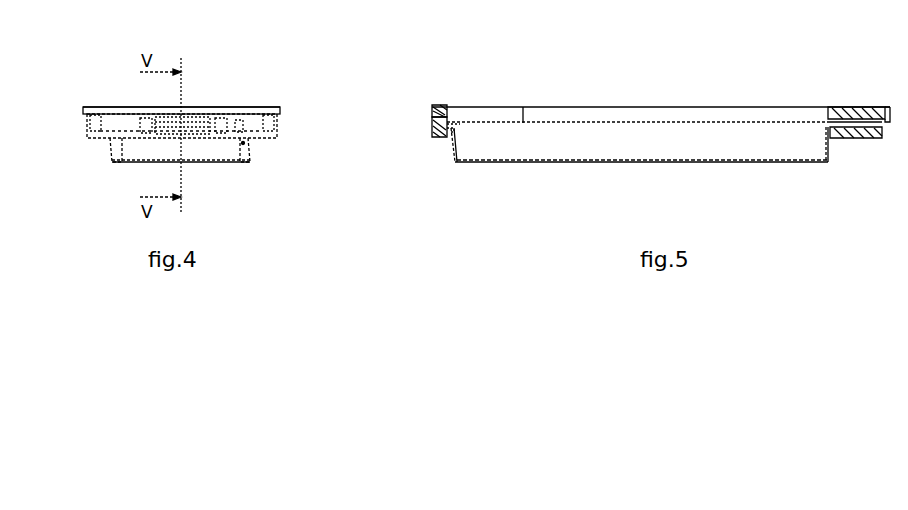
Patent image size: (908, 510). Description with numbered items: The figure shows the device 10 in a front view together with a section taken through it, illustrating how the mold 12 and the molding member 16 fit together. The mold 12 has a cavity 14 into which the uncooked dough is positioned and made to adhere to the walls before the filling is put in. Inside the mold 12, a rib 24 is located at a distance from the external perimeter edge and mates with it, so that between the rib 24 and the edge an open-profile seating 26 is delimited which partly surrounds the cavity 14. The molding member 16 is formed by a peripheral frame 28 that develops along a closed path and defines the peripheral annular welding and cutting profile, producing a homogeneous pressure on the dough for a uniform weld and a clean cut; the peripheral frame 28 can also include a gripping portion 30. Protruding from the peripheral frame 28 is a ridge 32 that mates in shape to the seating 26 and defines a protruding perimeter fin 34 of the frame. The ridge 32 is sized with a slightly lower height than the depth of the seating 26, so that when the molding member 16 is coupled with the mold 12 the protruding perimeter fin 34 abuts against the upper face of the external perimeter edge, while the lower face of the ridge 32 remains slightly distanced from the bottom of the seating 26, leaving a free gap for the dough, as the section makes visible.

In FIG. 4, the device 10 is at (205, 75).
In FIG. 5, the device 10 is at (688, 98).
In FIG. 4, the mold 12 is at (237, 162).
In FIG. 5, the mold 12 is at (598, 163).
In FIG. 4, the cavity 14 is at (243, 143).
In FIG. 5, the cavity 14 is at (512, 152).
In FIG. 4, the molding member 16 is at (270, 108).
In FIG. 5, the rib 24 is at (452, 129).
In FIG. 4, the seating 26 is at (104, 142).
In FIG. 5, the peripheral frame 28 is at (446, 110).
In FIG. 5, the gripping portion 30 is at (864, 106).
In FIG. 4, the ridge 32 is at (76, 125).
In FIG. 5, the ridge 32 is at (446, 127).
In FIG. 5, the protruding perimeter fin 34 is at (431, 108).